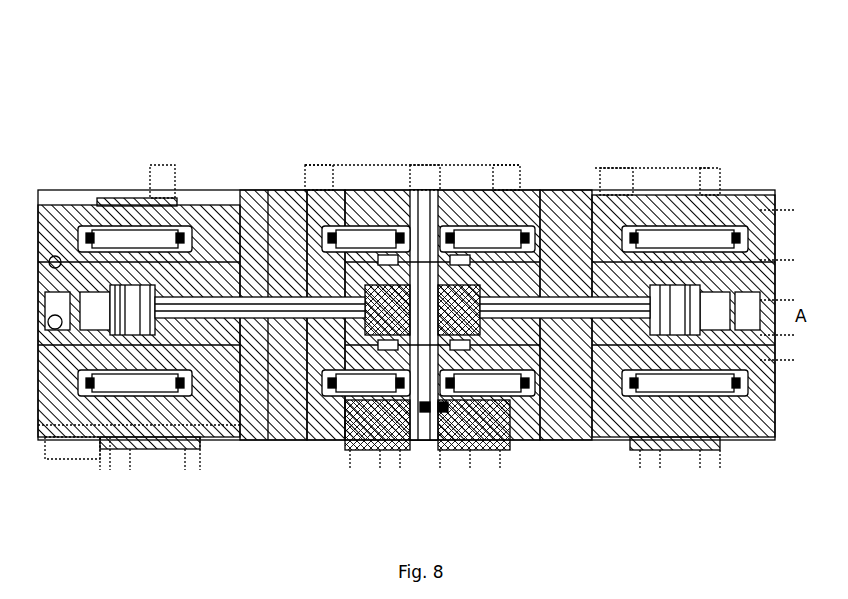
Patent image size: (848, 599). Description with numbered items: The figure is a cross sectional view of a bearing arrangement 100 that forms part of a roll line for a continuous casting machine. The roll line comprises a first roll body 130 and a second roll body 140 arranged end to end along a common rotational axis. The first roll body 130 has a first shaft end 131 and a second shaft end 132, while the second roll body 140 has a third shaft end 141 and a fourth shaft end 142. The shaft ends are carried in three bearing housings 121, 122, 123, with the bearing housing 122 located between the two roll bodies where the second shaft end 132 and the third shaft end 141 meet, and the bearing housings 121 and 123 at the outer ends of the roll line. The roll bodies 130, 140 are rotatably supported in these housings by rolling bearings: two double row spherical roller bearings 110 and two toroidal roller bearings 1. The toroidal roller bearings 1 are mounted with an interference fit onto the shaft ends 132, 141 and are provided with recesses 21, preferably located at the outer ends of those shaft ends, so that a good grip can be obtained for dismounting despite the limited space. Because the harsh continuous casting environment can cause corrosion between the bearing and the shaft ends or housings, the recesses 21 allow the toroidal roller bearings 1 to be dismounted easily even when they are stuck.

The bearing arrangement 100 is at (186, 98).
The bearing housing 121 is at (135, 205).
The first roll body 130 is at (275, 195).
The second shaft end 132 is at (345, 220).
The toroidal roller bearing 1 is at (453, 222).
The second roll body 140 is at (569, 195).
The fourth shaft end 142 is at (632, 225).
The double row spherical roller bearing 110 is at (666, 205).
The first shaft end 131 is at (195, 402).
The bearing housing 122 is at (395, 425).
The recess 21 is at (462, 410).
The third shaft end 141 is at (527, 420).
The bearing housing 123 is at (681, 430).